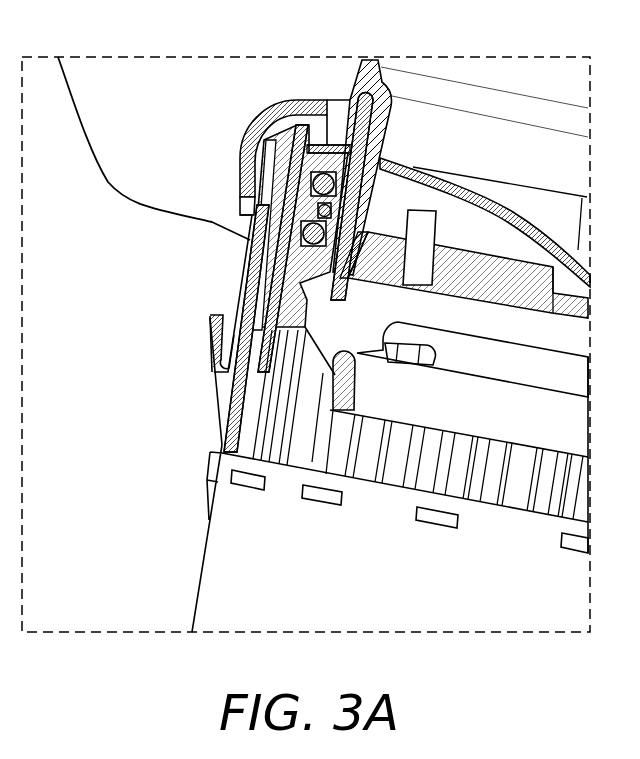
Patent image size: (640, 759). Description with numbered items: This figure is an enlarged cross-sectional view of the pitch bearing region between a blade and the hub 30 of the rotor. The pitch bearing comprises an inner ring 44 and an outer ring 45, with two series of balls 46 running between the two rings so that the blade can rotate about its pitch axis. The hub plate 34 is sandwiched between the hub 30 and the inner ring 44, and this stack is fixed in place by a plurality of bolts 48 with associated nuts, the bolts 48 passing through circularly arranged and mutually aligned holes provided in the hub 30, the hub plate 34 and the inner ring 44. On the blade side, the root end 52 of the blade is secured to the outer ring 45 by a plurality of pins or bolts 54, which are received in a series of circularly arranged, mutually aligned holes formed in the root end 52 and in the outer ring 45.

The hub 30 is at (362, 64).
The hub plate 34 is at (518, 211).
The inner ring 44 is at (310, 167).
The outer ring 45 is at (312, 208).
The balls 46 is at (304, 249).
The bolts 48 is at (364, 142).
The root end 52 is at (222, 566).
The pins/bolts 54 is at (270, 328).